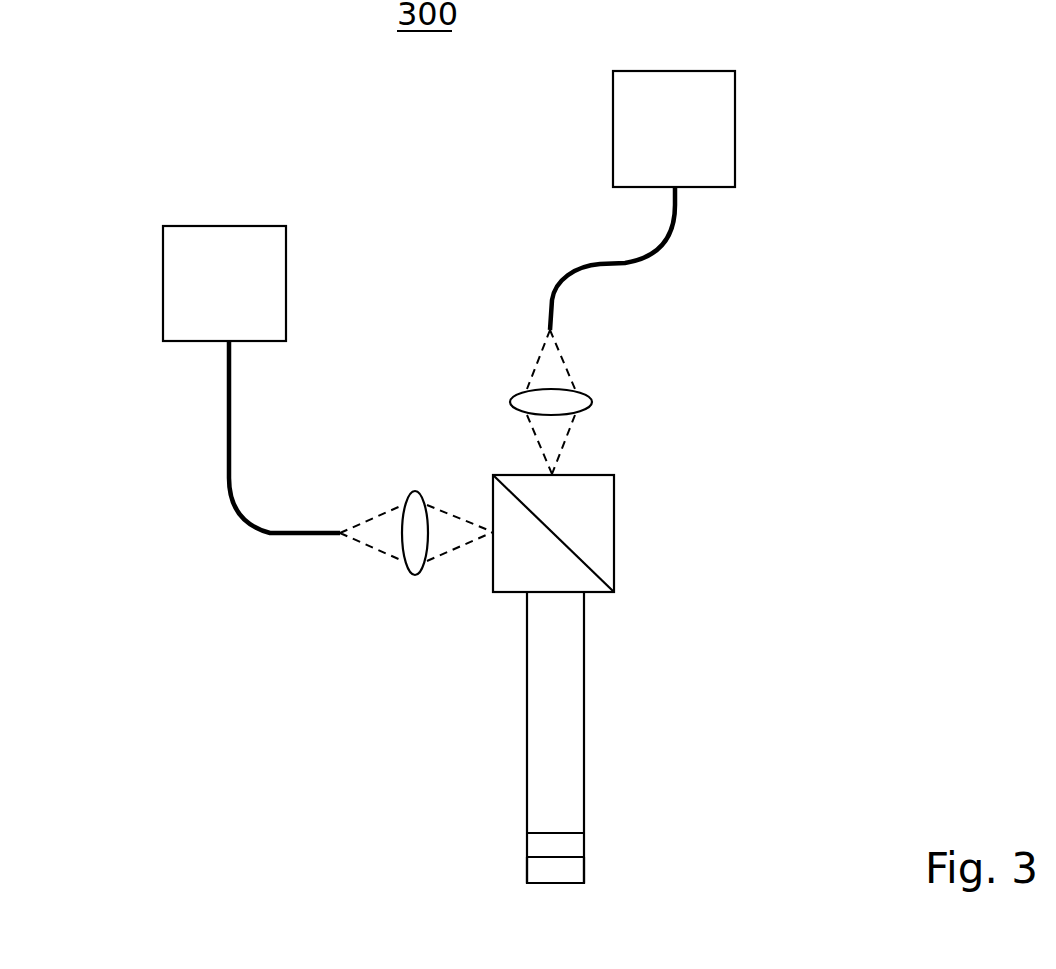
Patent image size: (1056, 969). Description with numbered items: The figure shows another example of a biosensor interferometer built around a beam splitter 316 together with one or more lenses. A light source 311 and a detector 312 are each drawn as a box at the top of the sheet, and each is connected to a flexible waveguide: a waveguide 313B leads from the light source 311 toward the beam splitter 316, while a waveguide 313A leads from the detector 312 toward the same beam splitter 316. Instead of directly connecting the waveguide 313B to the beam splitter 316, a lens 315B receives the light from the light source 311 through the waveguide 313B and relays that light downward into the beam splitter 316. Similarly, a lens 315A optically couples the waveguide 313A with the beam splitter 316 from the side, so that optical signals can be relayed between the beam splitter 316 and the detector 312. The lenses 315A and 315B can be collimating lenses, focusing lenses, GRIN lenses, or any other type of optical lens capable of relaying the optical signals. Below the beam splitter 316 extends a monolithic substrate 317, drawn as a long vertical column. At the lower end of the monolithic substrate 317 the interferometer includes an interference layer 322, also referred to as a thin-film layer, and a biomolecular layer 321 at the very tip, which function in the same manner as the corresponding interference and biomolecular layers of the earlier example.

The light source 311 is at (728, 135).
The detector 312 is at (213, 237).
The waveguide 313A is at (225, 412).
The waveguide 313B is at (620, 267).
The lens 315A is at (411, 480).
The lens 315B is at (582, 392).
The beam splitter 316 is at (614, 552).
The monolithic substrate 317 is at (584, 720).
The biomolecular layer 321 is at (584, 875).
The interference layer 322 is at (528, 842).